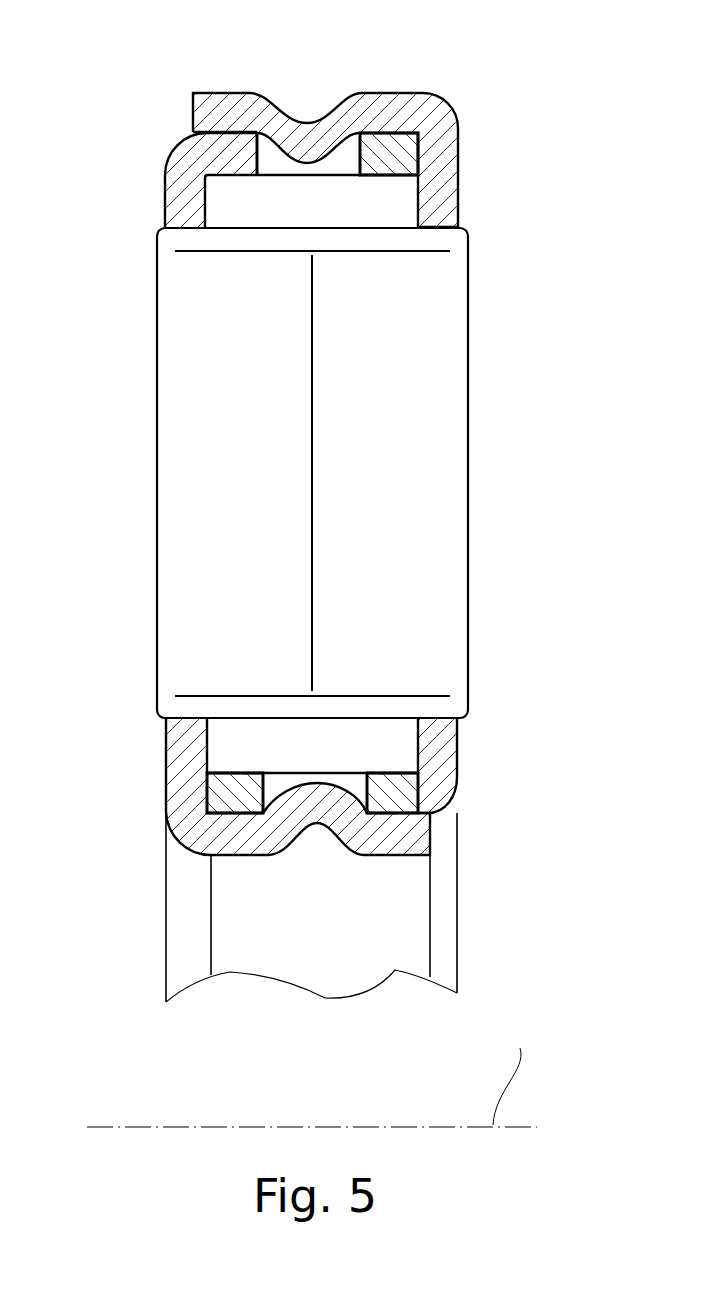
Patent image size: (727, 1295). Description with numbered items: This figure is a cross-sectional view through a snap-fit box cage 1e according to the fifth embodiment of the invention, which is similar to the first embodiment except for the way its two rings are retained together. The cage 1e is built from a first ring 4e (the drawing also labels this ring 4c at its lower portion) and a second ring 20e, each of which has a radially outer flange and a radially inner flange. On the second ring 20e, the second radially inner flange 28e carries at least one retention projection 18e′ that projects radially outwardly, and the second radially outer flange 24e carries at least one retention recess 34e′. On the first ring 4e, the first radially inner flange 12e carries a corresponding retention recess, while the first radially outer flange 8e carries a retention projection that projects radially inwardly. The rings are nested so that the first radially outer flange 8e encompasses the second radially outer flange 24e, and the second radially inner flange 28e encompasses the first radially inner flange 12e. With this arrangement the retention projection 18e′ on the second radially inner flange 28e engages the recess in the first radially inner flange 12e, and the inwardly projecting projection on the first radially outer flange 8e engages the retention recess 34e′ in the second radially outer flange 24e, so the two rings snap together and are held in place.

The snap-fit box cage 1e is at (307, 567).
The first ring 4e is at (458, 188).
The outer ring (bottom) 4c is at (459, 753).
The first radially outer flange 8e is at (240, 112).
The first radially inner flange 12e is at (387, 792).
The retention projection 18e′ is at (312, 798).
The second ring 20e is at (167, 198).
The second radially outer flange 24e is at (392, 153).
The second radially inner flange 28e is at (377, 826).
The retention recess 34e′ is at (268, 167).